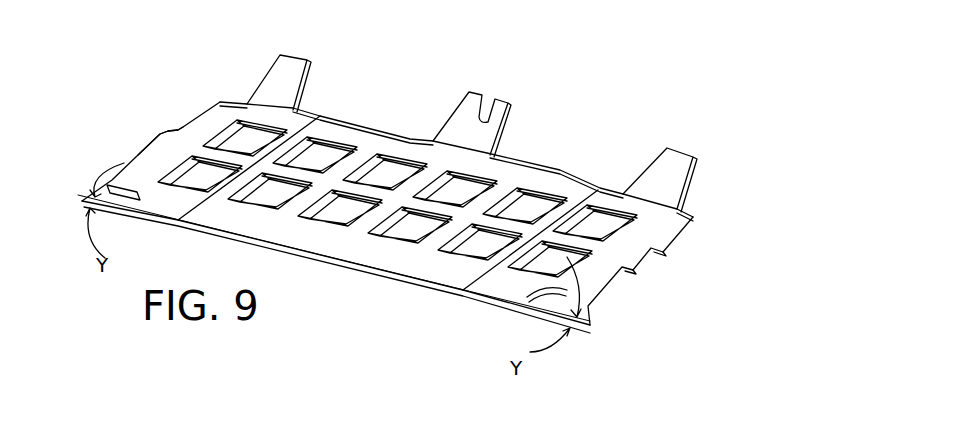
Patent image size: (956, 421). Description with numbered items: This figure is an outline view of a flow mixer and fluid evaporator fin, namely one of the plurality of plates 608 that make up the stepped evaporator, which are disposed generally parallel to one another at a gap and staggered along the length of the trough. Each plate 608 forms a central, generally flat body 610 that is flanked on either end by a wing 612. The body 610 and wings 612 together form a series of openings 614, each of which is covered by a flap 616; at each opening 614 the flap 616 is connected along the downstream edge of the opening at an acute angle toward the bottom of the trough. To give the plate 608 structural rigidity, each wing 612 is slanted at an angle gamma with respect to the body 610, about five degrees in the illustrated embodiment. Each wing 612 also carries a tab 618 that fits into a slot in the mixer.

The plate 608 is at (367, 137).
The body 610 is at (347, 247).
The wing 612 is at (223, 117).
The opening 614 is at (316, 150).
The flap 616 is at (527, 200).
The tab 618 is at (153, 145).